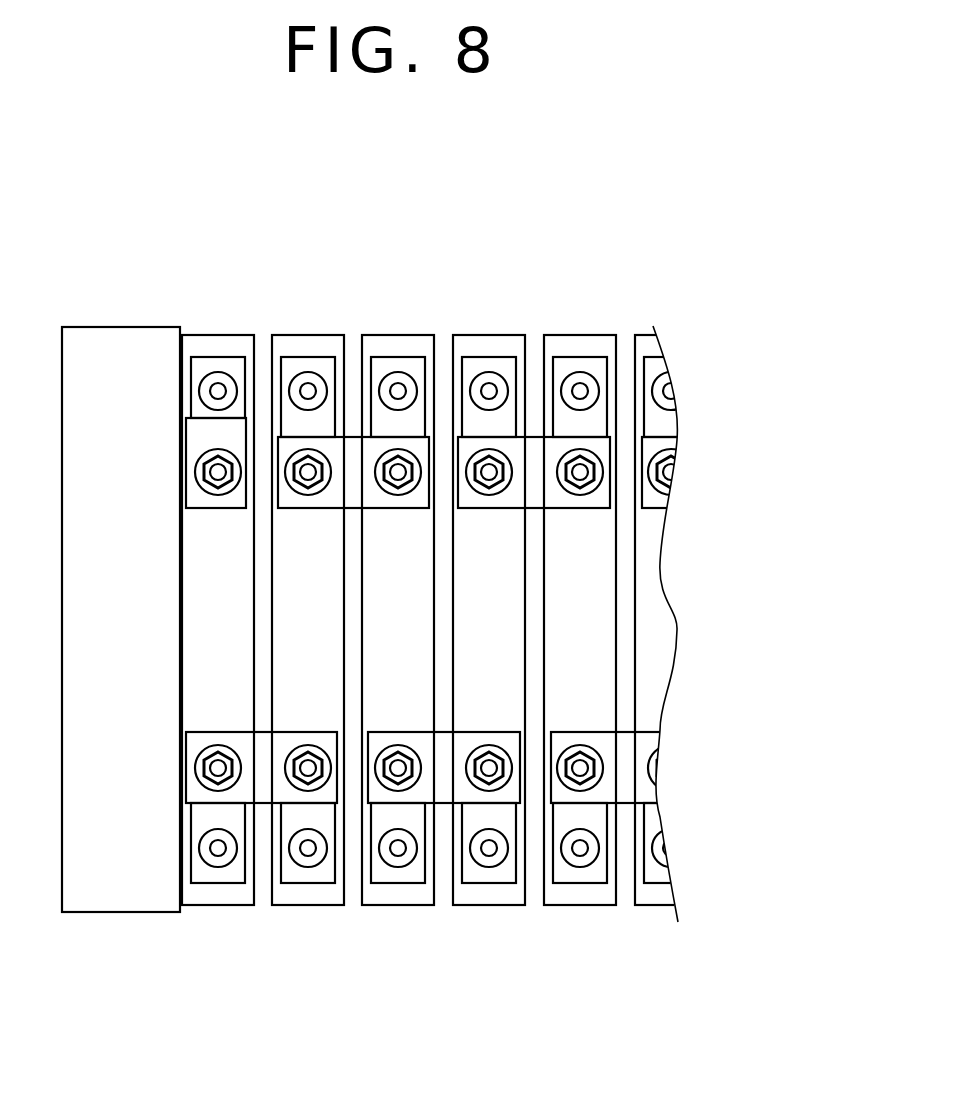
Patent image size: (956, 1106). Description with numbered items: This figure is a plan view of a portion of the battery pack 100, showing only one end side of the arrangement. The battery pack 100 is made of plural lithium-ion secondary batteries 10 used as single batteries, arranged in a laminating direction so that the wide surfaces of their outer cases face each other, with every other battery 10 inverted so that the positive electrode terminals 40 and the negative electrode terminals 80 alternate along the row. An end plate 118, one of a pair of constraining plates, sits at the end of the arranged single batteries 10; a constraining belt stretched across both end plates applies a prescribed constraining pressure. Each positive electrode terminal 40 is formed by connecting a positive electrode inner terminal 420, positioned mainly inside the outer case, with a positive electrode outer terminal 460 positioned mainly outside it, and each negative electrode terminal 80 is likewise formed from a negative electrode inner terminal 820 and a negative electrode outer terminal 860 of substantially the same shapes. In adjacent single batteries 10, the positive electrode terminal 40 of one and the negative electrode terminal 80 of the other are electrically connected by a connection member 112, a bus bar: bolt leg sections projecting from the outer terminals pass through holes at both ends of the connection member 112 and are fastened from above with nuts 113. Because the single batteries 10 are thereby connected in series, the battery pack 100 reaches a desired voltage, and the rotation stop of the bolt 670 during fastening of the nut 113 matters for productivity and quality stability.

The battery pack 100 is at (729, 328).
The end plate 118 is at (110, 338).
The lithium-ion secondary battery 10 is at (417, 342).
The negative electrode terminal 80 is at (308, 355).
The negative electrode outer terminal 860 is at (289, 371).
The negative electrode inner terminal 820 is at (313, 387).
The positive electrode terminal 40 is at (307, 886).
The positive electrode outer terminal 460 is at (325, 875).
The positive electrode inner terminal 420 is at (303, 850).
The connection member 112 is at (352, 492).
The nut 113 is at (505, 473).
The bolt 670 is at (495, 492).